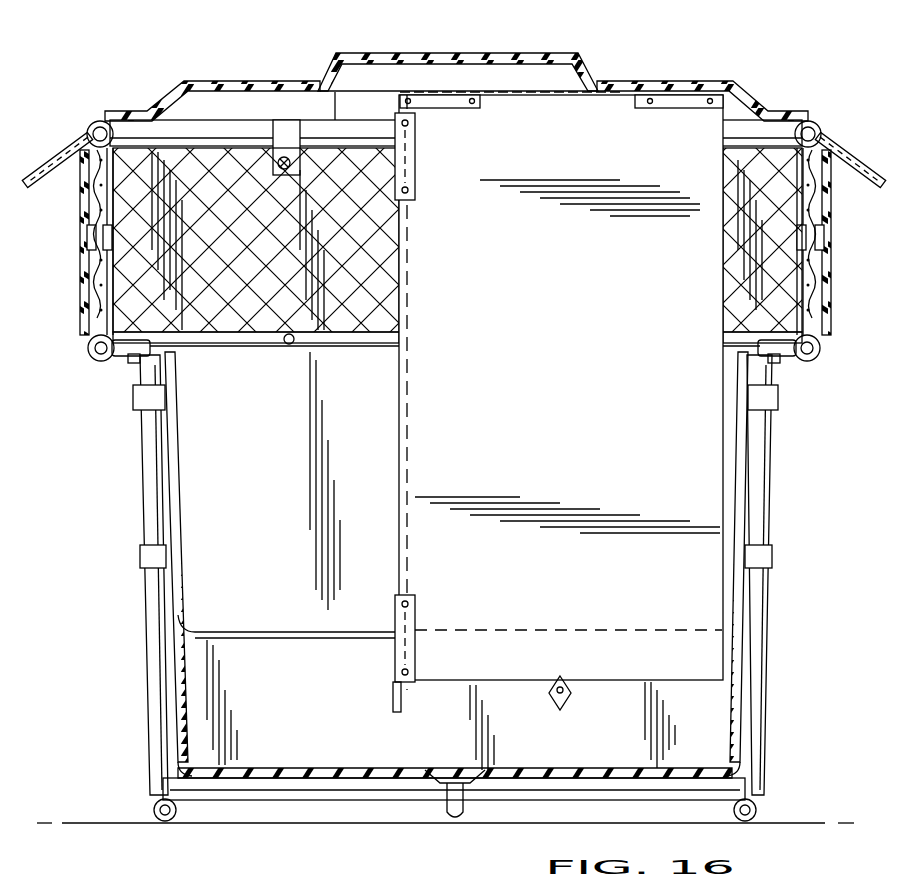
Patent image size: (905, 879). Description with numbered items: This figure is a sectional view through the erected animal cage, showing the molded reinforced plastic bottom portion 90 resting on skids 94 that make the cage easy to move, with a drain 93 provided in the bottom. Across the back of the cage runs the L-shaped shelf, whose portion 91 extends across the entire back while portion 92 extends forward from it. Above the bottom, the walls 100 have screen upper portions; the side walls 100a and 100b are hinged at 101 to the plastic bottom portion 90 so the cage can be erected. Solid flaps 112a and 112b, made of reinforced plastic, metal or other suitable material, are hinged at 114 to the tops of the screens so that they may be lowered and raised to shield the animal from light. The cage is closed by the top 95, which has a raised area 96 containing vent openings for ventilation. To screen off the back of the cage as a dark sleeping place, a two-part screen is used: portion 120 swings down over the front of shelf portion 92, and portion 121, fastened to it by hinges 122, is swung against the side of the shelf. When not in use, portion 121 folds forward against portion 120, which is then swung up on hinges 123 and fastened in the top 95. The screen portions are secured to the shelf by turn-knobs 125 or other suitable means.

The bottom portion 90 is at (168, 506).
The shelf portion 91 is at (262, 631).
The shelf portion 92 is at (540, 630).
The drain 93 is at (450, 812).
The skids 94 is at (155, 805).
The top 95 is at (233, 78).
The raised area 96 is at (326, 66).
The walls 100 is at (242, 275).
The side wall 100a is at (95, 213).
The side wall 100b is at (822, 298).
The hinge 101 is at (97, 364).
The solid flap 112a is at (83, 256).
The solid flap 112b is at (829, 233).
The hinge 114 is at (101, 121).
The screen portion 120 is at (561, 386).
The screen portion 121 is at (405, 478).
The hinges 122 is at (410, 168).
The hinges 123 is at (455, 106).
The turn-knobs 125 is at (393, 703).